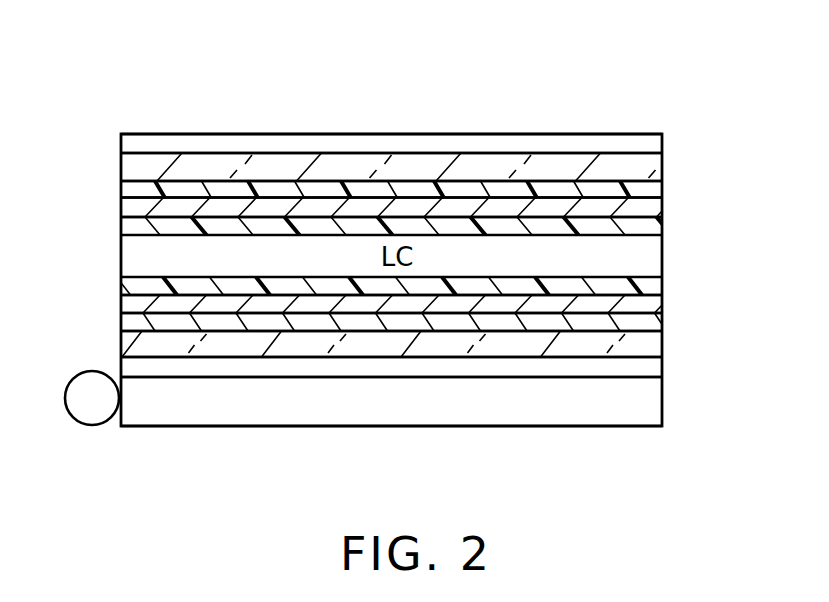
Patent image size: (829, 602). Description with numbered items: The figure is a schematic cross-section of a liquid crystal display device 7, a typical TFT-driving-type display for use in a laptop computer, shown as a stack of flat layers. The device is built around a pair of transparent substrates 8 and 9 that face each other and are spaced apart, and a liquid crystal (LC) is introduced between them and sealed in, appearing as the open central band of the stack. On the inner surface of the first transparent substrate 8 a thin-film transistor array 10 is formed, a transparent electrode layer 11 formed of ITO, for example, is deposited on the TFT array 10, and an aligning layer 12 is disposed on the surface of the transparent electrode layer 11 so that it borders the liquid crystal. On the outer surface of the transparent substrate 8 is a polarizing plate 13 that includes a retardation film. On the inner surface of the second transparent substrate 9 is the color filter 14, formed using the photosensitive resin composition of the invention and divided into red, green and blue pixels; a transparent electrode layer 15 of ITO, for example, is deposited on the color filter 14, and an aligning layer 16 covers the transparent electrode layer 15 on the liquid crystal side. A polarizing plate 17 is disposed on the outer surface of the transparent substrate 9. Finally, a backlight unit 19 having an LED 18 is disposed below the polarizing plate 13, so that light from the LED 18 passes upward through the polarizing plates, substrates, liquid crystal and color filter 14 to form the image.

The liquid crystal display device 7 is at (525, 110).
The first transparent substrate 8 is at (120, 342).
The second transparent substrate 9 is at (120, 164).
The thin-film transistor array 10 is at (661, 320).
The transparent electrode layer 11 is at (120, 303).
The aligning layer 12 is at (663, 286).
The polarizing plate 13 is at (663, 367).
The color filter 14 is at (663, 190).
The transparent electrode layer 15 is at (120, 208).
The aligning layer 16 is at (663, 221).
The polarizing plate 17 is at (663, 144).
The LED 18 is at (65, 398).
The backlight unit 19 is at (349, 427).